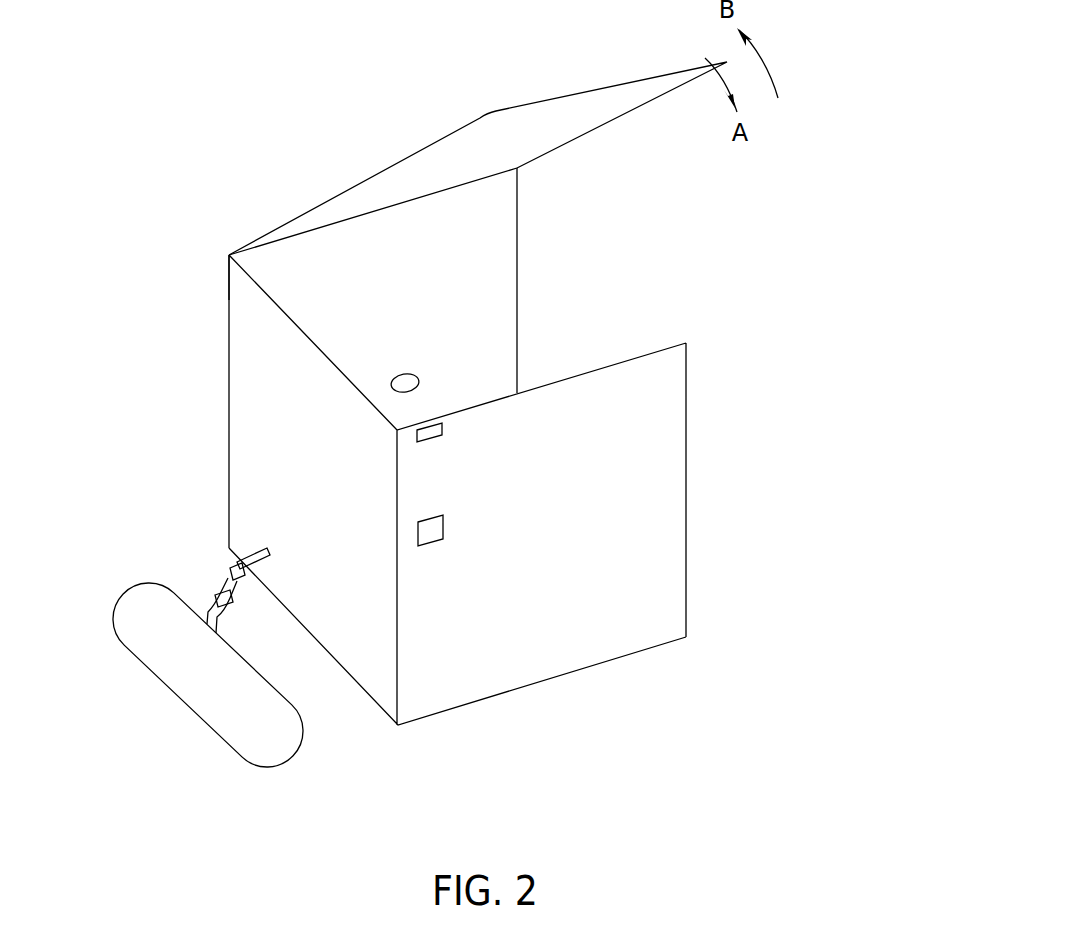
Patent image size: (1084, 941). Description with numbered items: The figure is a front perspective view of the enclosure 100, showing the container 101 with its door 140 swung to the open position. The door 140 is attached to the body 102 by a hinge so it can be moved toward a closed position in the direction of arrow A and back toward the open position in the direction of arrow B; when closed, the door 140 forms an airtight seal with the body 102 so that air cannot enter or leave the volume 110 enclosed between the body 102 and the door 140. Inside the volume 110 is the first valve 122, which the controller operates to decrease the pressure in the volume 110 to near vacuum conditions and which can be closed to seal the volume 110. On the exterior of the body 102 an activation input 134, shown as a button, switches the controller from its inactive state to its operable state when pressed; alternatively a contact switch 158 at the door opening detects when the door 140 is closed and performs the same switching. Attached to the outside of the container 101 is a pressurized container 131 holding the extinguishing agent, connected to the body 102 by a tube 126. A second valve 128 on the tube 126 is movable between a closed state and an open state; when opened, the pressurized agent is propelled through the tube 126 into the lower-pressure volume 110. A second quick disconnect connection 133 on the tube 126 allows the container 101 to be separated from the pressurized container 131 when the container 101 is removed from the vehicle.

The enclosure 100 is at (692, 204).
The container 101 is at (219, 251).
The body 102 is at (676, 396).
The volume 110 is at (568, 330).
The first valve 122 is at (411, 375).
The tube 126 is at (205, 612).
The second valve 128 is at (233, 605).
The pressurized container 131 is at (202, 700).
The second quick disconnect connection 133 is at (230, 568).
The activation input 134 is at (427, 525).
The door 140 is at (555, 116).
The contact switch 158 is at (429, 435).